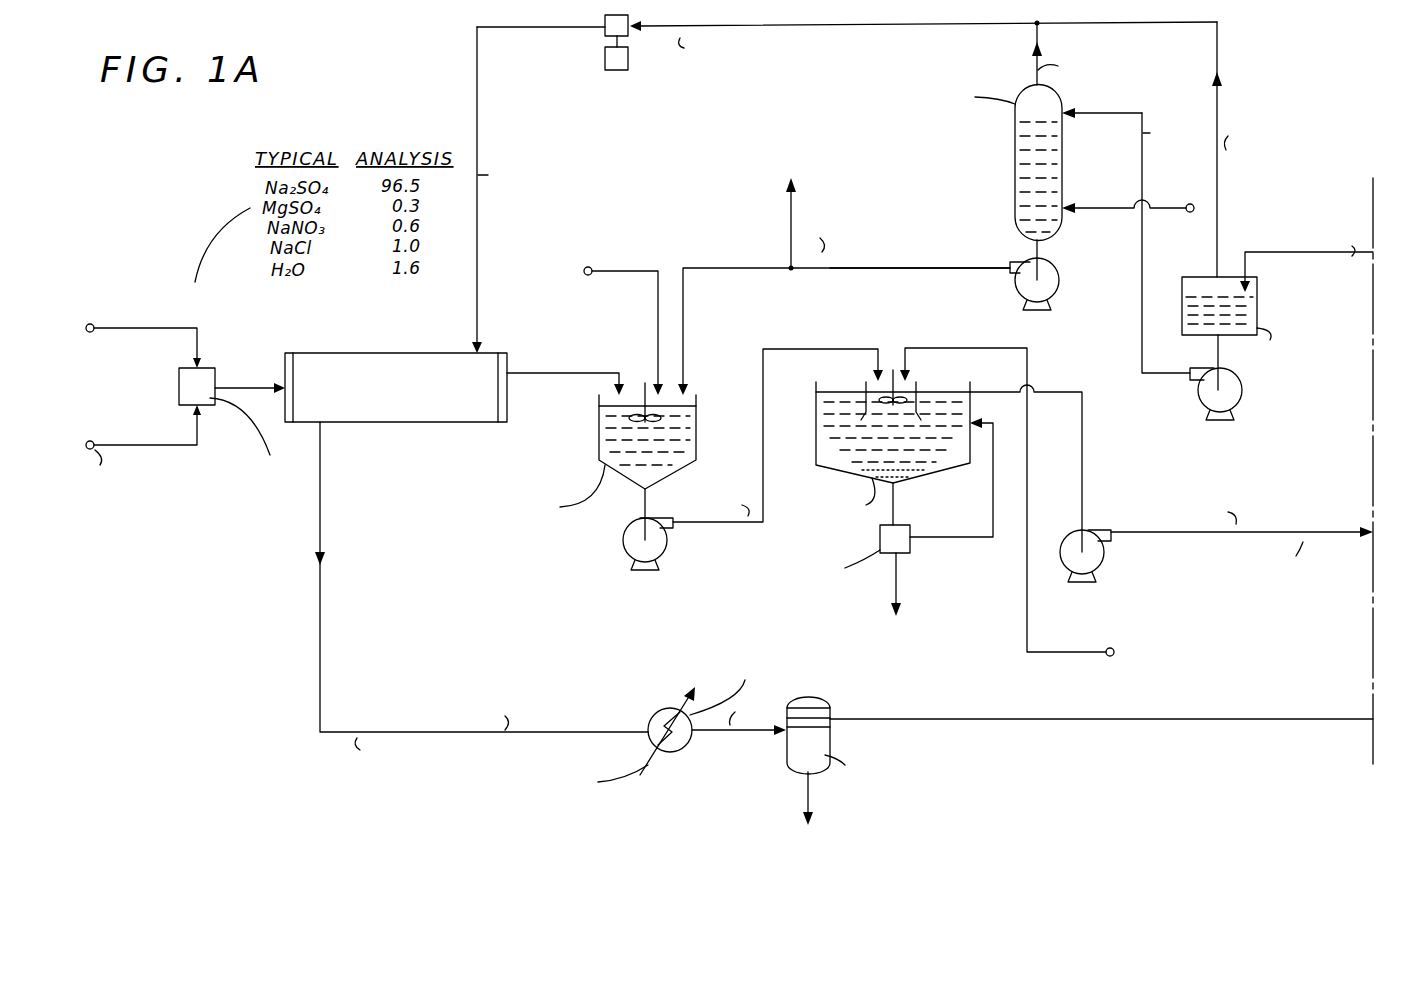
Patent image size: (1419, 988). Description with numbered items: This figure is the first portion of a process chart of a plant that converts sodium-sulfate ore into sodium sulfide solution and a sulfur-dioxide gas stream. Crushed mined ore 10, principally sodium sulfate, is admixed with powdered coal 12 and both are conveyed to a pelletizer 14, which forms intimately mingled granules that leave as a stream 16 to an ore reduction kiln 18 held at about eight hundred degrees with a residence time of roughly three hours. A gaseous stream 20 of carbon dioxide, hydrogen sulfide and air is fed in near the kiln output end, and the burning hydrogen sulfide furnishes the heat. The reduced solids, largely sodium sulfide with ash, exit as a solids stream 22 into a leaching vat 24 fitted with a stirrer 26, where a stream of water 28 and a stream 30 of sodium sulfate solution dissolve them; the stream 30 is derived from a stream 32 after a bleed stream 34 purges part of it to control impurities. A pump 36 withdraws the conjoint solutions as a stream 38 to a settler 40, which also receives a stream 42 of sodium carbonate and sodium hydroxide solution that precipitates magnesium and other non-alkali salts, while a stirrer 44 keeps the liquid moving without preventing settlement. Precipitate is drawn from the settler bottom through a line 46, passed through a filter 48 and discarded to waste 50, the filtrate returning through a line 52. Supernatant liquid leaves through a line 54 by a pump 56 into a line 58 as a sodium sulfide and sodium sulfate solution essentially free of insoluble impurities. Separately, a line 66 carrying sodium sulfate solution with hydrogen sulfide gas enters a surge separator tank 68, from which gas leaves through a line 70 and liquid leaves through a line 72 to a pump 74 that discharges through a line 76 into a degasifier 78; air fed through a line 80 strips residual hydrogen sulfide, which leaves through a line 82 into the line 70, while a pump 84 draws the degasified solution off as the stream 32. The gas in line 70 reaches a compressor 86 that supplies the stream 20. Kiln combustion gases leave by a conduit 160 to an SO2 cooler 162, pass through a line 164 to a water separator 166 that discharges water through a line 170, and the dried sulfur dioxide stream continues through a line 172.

The mined ore 10 is at (125, 336).
The powdered coal 12 is at (138, 443).
The pelletizer 14 is at (179, 384).
The stream 16 is at (242, 390).
The ore reduction kiln 18 is at (487, 422).
The gaseous stream 20 is at (478, 303).
The solids stream 22 is at (605, 370).
The leaching vat 24 is at (696, 433).
The stirrer 26 is at (640, 380).
The stream of water 28 is at (622, 275).
The stream 30 is at (728, 267).
The stream 32 is at (932, 268).
The bleed stream 34 is at (805, 212).
The pump 36 is at (632, 556).
The stream 38 is at (700, 530).
The settler 40 is at (816, 452).
The stream 42 is at (1027, 617).
The stirrer 44 is at (893, 370).
The line 46 is at (902, 476).
The filter 48 is at (910, 553).
The waste 50 is at (883, 590).
The line 52 is at (990, 425).
The line 54 is at (1060, 390).
The pump 56 is at (1068, 540).
The line 58 is at (1130, 538).
The line 66 is at (1258, 258).
The surge separator tank 68 is at (1257, 303).
The line 70 is at (1218, 46).
The line 72 is at (1217, 352).
The pump 74 is at (1202, 402).
The line 76 is at (1142, 312).
The degasifier 78 is at (1015, 170).
The line 80 is at (1103, 208).
The line 82 is at (1035, 38).
The pump 84 is at (1018, 282).
The compressor 86 is at (605, 58).
The conduit 160 is at (320, 604).
The SO2 cooler 162 is at (681, 756).
The line 164 is at (752, 734).
The water separator 166 is at (830, 704).
The line 170 is at (807, 800).
The line 172 is at (1190, 720).